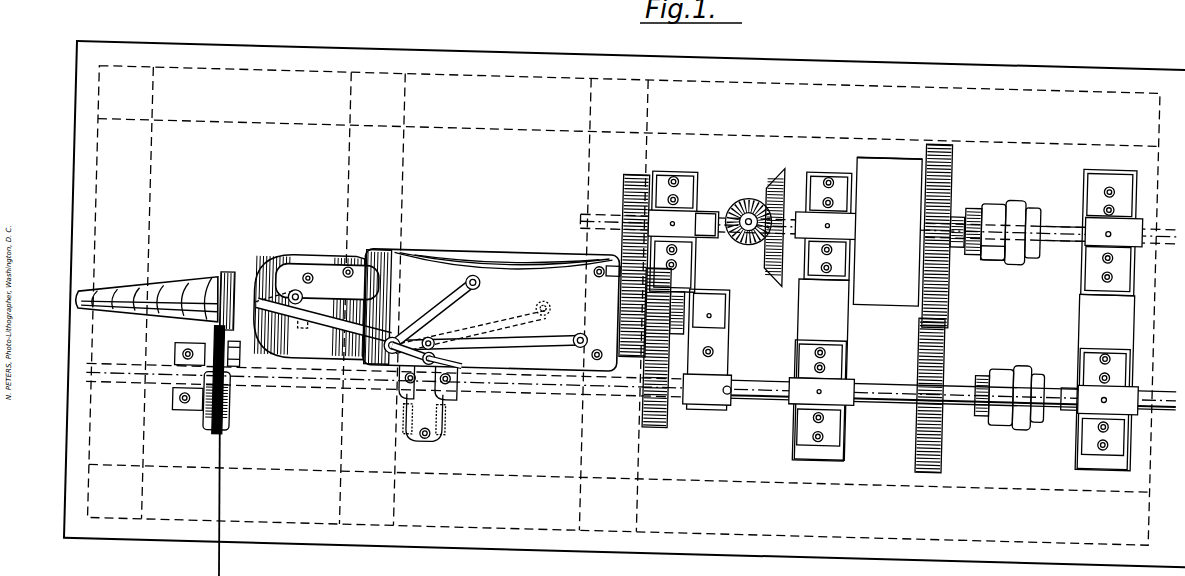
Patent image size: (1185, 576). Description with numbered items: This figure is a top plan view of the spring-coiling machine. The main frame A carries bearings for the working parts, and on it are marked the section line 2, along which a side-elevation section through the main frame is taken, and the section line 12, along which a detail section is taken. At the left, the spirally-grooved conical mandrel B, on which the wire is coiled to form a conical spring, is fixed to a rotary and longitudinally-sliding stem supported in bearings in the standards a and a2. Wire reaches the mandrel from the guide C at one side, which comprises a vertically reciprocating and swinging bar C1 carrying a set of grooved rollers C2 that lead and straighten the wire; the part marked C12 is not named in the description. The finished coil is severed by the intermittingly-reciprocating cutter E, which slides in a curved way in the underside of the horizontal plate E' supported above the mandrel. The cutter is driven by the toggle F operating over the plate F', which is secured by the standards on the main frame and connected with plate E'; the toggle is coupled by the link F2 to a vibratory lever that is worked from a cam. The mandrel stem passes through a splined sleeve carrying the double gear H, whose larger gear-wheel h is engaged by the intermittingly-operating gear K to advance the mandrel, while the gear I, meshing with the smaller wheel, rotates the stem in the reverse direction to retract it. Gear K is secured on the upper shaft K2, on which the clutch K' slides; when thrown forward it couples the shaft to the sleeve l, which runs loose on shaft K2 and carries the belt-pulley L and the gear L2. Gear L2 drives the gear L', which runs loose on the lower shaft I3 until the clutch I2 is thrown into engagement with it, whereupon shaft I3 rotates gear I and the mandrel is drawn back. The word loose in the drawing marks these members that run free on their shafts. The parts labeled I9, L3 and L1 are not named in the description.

The main frame A is at (624, 304).
The section line 2 is at (95, 372).
The section line 12 is at (585, 208).
The spirally-grooved conical mandrel B is at (147, 291).
The cutter E is at (233, 286).
The horizontal plate E' is at (323, 307).
The standard a is at (389, 243).
The toggle F is at (469, 379).
The plate F' is at (486, 313).
The link F2 is at (462, 375).
The larger gear-wheel h is at (623, 270).
The guide C is at (236, 380).
The reciprocating and swinging bar C1 is at (185, 355).
The clutch fork C12 is at (248, 345).
The grooved rollers C2 is at (234, 412).
The gear K is at (660, 253).
The gear I is at (672, 408).
The double gear H is at (655, 300).
The standard a2 is at (708, 349).
The bevel pinion I9 is at (755, 181).
The bevel gear L3 is at (786, 158).
The belt-pulley L is at (855, 309).
The gear L' is at (947, 238).
The lower loose gear wheel L1 is at (955, 262).
The gear L2 is at (958, 147).
The clutch K' is at (1025, 220).
The sleeve l is at (985, 236).
The upper shaft K2 is at (1060, 196).
The shaft I3 is at (888, 371).
The clutch I2 is at (999, 348).
The loose wheel indication loose is at (958, 433).